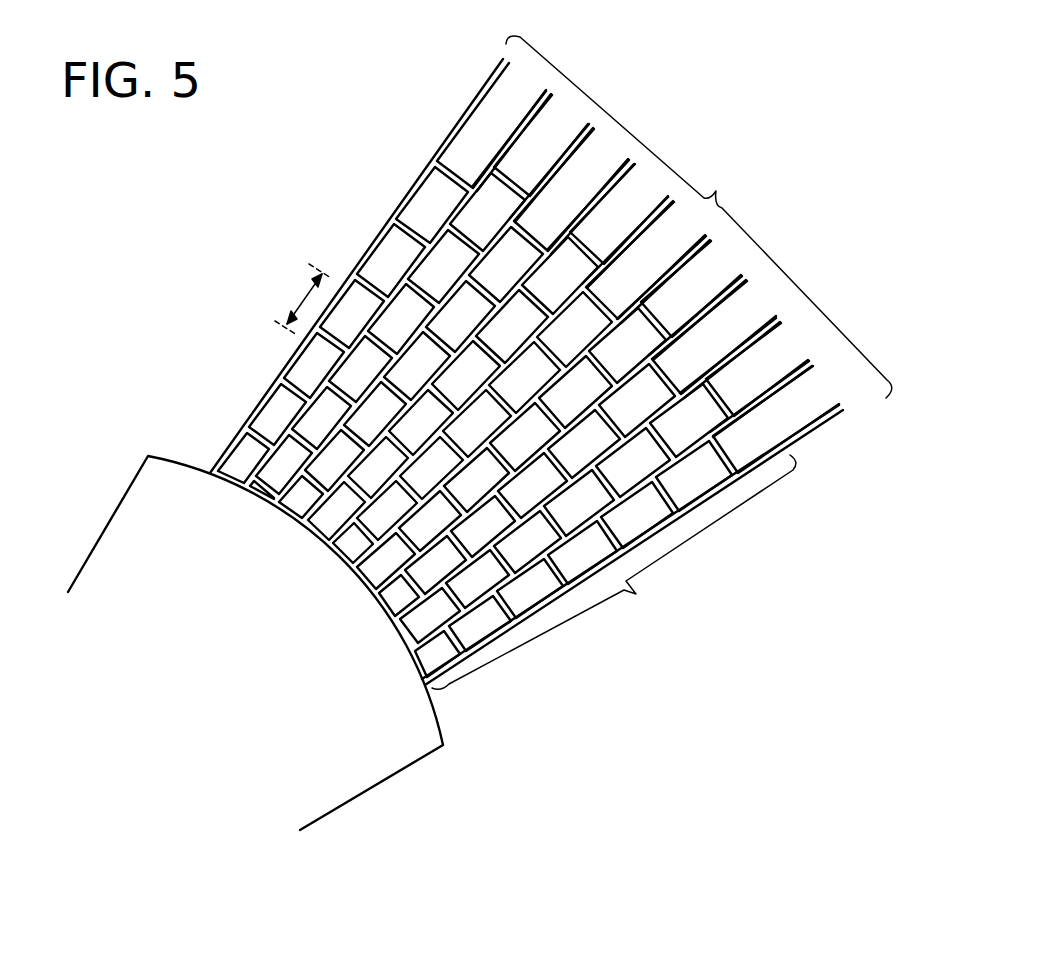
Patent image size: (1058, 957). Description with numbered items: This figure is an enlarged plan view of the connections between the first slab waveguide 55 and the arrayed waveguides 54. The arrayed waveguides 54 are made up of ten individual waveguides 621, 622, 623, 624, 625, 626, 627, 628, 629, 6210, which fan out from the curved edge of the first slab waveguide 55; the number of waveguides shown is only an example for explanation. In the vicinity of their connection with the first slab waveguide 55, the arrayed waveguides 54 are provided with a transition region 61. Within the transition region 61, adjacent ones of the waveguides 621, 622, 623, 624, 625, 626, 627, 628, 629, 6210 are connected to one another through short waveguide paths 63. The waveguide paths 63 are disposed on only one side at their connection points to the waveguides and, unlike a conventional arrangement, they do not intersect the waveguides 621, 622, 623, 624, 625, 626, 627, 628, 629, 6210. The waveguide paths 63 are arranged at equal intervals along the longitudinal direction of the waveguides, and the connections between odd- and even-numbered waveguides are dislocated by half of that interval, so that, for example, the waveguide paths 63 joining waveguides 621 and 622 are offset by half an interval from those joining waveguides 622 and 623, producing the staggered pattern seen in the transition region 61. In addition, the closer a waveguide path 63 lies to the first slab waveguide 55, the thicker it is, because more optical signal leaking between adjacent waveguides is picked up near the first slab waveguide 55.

The arrayed waveguides 54 is at (664, 254).
The first slab waveguide 55 is at (123, 500).
The transition region 61 is at (614, 572).
The waveguide 621 is at (827, 427).
The waveguide 622 is at (790, 388).
The waveguide 623 is at (730, 358).
The waveguide 624 is at (697, 318).
The waveguide 625 is at (663, 279).
The waveguide 626 is at (627, 242).
The waveguide 627 is at (590, 207).
The waveguide 628 is at (551, 173).
The waveguide 629 is at (528, 112).
The waveguide 6210 is at (470, 97).
The waveguide path 63 is at (240, 468).